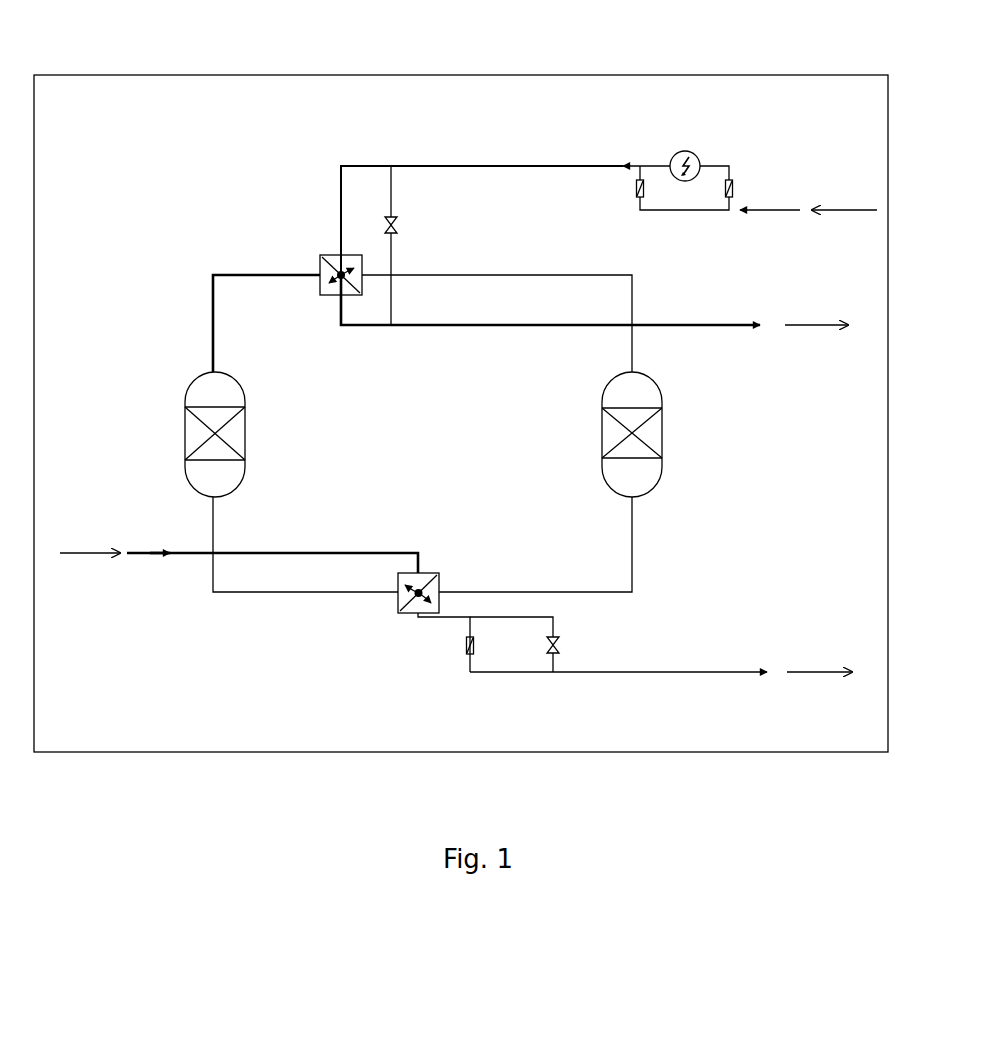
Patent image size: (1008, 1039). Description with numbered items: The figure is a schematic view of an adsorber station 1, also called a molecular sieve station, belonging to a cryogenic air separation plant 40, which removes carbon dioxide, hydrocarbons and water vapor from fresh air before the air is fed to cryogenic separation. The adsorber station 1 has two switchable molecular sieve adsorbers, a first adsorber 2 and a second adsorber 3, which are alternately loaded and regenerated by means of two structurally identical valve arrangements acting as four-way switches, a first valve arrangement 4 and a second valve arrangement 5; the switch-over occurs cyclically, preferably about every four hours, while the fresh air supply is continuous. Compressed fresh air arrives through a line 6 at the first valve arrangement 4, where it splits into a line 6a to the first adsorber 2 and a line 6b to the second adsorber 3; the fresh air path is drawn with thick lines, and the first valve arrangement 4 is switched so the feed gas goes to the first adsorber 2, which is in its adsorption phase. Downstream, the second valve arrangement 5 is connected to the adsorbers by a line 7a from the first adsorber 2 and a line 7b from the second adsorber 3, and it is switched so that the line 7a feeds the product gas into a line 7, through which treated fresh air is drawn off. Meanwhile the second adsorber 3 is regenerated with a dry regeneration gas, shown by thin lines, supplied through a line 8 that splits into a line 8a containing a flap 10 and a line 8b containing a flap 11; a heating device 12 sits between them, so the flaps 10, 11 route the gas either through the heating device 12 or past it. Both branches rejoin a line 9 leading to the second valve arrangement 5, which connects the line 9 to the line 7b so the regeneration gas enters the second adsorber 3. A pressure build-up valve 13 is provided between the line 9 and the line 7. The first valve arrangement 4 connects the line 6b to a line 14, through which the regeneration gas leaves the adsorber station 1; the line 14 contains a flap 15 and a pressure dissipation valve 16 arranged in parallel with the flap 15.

The air separation plant 40 is at (255, 72).
The adsorber station 1 is at (226, 226).
The first adsorber 2 is at (247, 433).
The second adsorber 3 is at (664, 433).
The first valve arrangement 4 is at (426, 572).
The second valve arrangement 5 is at (330, 258).
The line 6 is at (150, 555).
The line 6a is at (215, 528).
The line 6b is at (633, 545).
The line 7 is at (462, 326).
The line 7a is at (212, 300).
The line 7b is at (462, 275).
The line 8 is at (780, 211).
The line 8a is at (730, 170).
The line 8b is at (640, 202).
The line 9 is at (580, 165).
The flap 10 is at (735, 188).
The flap 11 is at (636, 188).
The heating device 12 is at (685, 150).
The pressure build-up valve 13 is at (397, 225).
The line 14 is at (605, 674).
The flap 15 is at (466, 645).
The pressure dissipation valve 16 is at (558, 648).